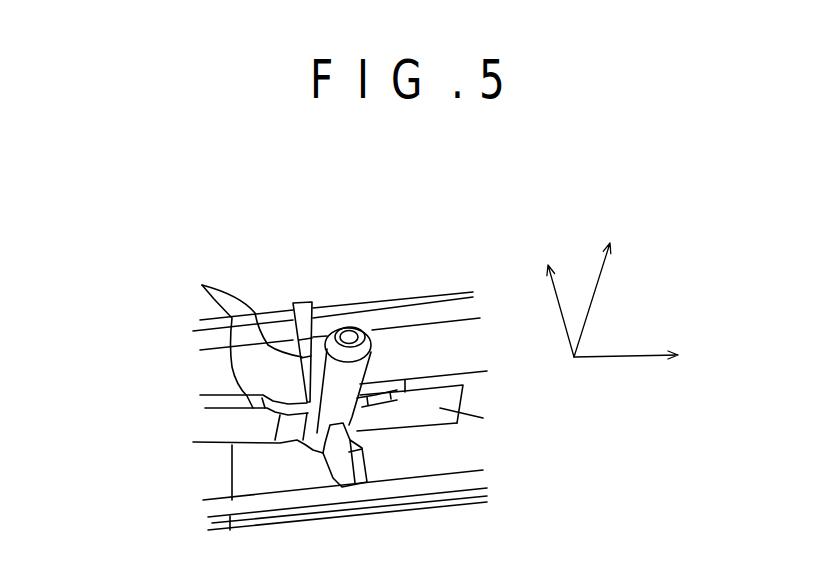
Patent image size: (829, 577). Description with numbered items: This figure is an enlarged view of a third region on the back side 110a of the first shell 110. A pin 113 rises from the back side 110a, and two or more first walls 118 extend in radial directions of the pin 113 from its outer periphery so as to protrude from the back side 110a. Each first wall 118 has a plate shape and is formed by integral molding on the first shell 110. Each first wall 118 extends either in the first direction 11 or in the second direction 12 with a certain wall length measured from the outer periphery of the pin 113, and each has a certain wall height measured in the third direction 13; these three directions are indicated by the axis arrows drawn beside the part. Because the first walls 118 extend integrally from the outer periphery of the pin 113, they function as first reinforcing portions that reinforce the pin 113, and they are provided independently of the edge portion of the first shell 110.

The first shell 110 is at (419, 296).
The back side 110a is at (242, 462).
The pin 113 is at (343, 307).
The first walls 118 is at (517, 440).
The first direction 11 is at (637, 370).
The second direction 12 is at (544, 301).
The third direction 13 is at (609, 291).